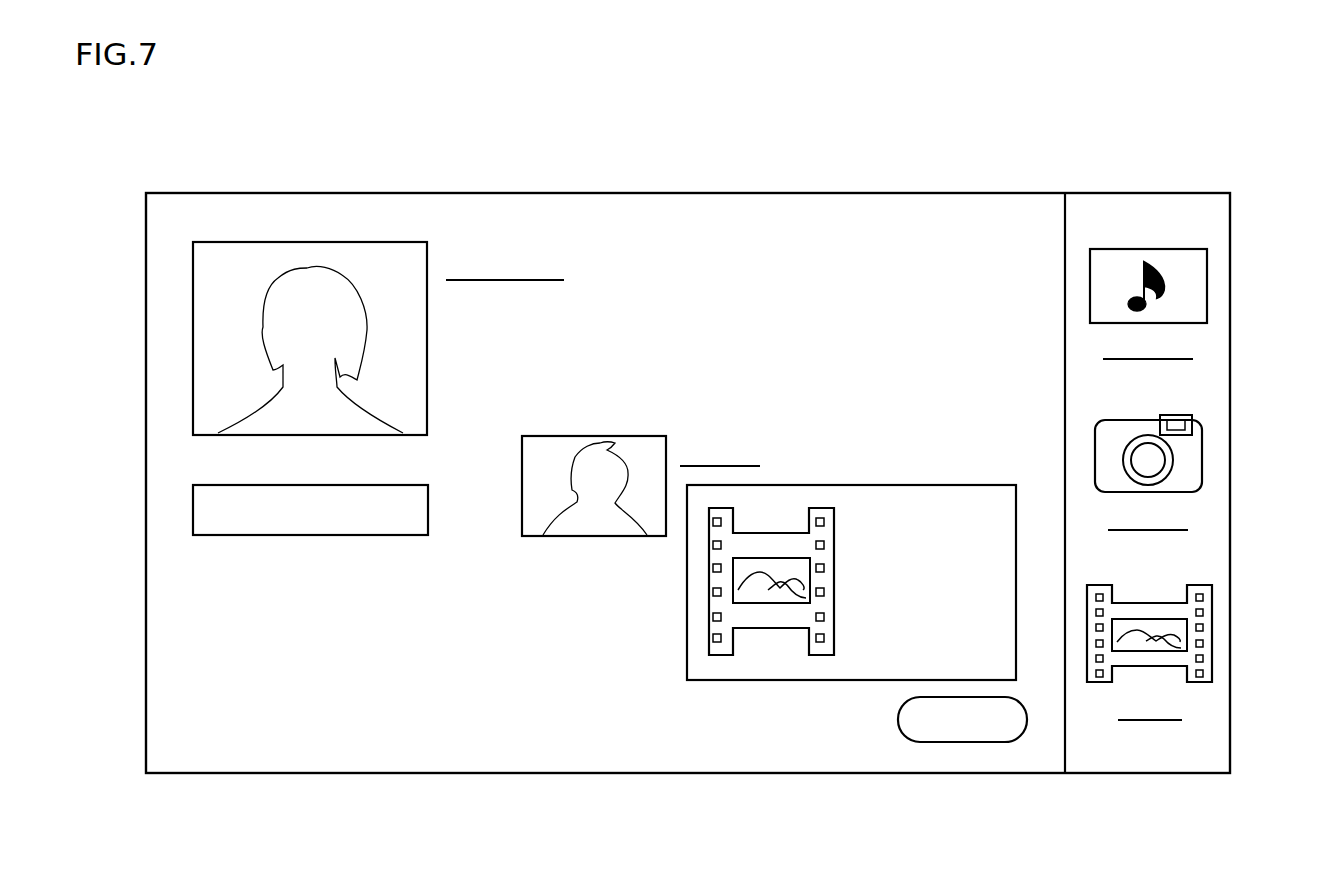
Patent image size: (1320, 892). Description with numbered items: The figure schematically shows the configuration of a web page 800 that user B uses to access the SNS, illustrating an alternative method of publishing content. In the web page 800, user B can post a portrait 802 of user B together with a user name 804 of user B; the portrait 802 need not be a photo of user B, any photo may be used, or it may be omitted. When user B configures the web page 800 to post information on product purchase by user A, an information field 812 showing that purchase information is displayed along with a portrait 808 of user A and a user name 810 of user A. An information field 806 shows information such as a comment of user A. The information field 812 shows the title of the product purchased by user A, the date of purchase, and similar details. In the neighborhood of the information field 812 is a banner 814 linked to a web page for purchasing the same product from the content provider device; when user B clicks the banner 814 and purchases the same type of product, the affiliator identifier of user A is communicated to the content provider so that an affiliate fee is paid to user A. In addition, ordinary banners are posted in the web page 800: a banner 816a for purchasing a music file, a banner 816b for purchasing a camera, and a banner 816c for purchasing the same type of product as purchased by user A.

The web page 800 is at (688, 193).
The portrait 802 is at (312, 240).
The user name 804 is at (505, 243).
The information field 806 is at (312, 536).
The portrait 808 is at (594, 537).
The user name 810 is at (720, 440).
The information field 812 is at (848, 484).
The banner 814 is at (965, 743).
The banner 816a is at (1195, 345).
The banner 816b is at (1192, 517).
The banner 816c is at (1188, 706).